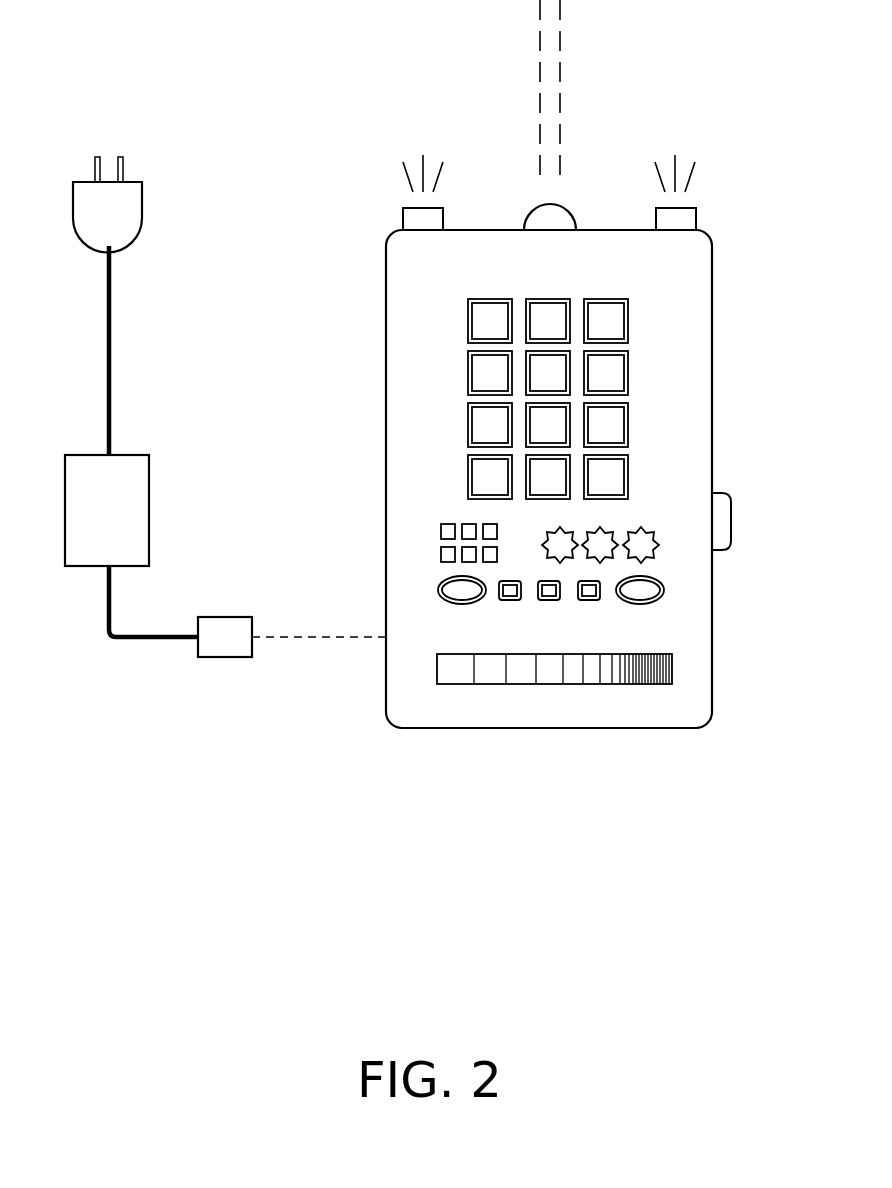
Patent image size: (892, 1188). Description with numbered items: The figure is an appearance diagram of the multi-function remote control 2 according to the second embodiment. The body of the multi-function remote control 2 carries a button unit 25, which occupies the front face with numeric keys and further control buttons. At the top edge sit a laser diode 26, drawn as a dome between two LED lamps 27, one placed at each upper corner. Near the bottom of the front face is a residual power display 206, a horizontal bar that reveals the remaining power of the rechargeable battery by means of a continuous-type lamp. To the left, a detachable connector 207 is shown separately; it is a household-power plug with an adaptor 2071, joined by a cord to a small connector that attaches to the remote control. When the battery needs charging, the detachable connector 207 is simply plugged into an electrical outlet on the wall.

The multi-function remote control 2 is at (763, 867).
The button unit 25 is at (672, 590).
The laser diode 26 is at (555, 218).
The LED lamps 27 is at (417, 220).
The residual power display 206 is at (529, 675).
The detachable connector 207 is at (108, 128).
The adaptor 2071 is at (120, 503).